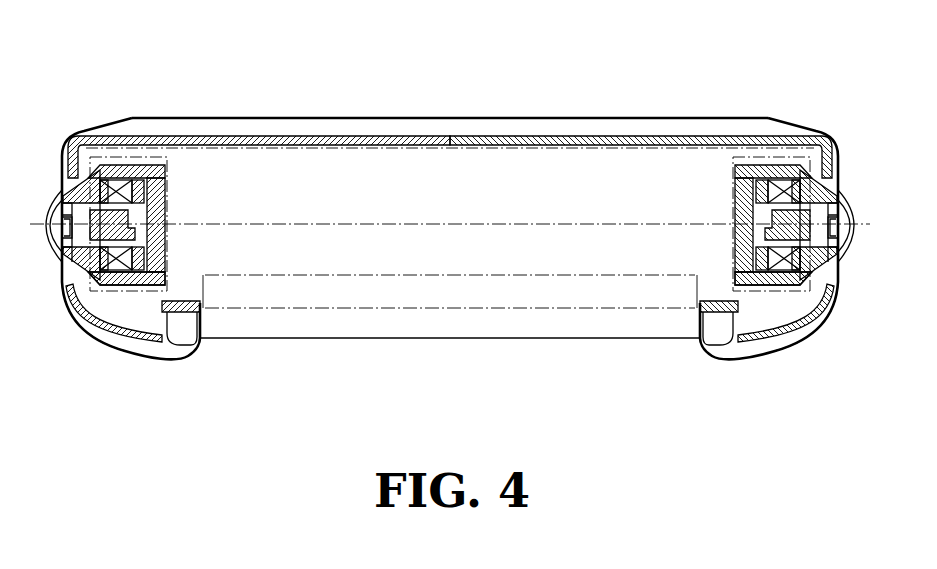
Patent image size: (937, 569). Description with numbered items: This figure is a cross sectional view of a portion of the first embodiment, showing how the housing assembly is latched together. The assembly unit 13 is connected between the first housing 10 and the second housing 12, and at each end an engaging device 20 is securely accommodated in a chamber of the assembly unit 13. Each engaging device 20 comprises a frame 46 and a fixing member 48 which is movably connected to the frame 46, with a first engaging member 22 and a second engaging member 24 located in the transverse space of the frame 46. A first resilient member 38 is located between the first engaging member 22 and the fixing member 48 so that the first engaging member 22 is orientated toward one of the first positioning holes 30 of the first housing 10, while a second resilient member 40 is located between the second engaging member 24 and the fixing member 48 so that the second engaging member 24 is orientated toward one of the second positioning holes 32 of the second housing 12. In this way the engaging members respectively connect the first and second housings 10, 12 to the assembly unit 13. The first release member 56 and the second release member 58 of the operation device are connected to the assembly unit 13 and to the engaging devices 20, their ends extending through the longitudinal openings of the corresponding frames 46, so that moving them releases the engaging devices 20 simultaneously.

The first housing 10 is at (385, 140).
The second housing 12 is at (110, 330).
The assembly unit 13 is at (337, 207).
The engaging device 20 is at (178, 212).
The first engaging member 22 is at (82, 175).
The second engaging member 24 is at (88, 330).
The first positioning hole 30 is at (36, 208).
The second positioning hole 32 is at (62, 252).
The first resilient member 38 is at (135, 168).
The second resilient member 40 is at (167, 258).
The frame 46 is at (95, 275).
The fixing member 48 is at (164, 200).
The first release member 56 is at (68, 315).
The second release member 58 is at (837, 293).